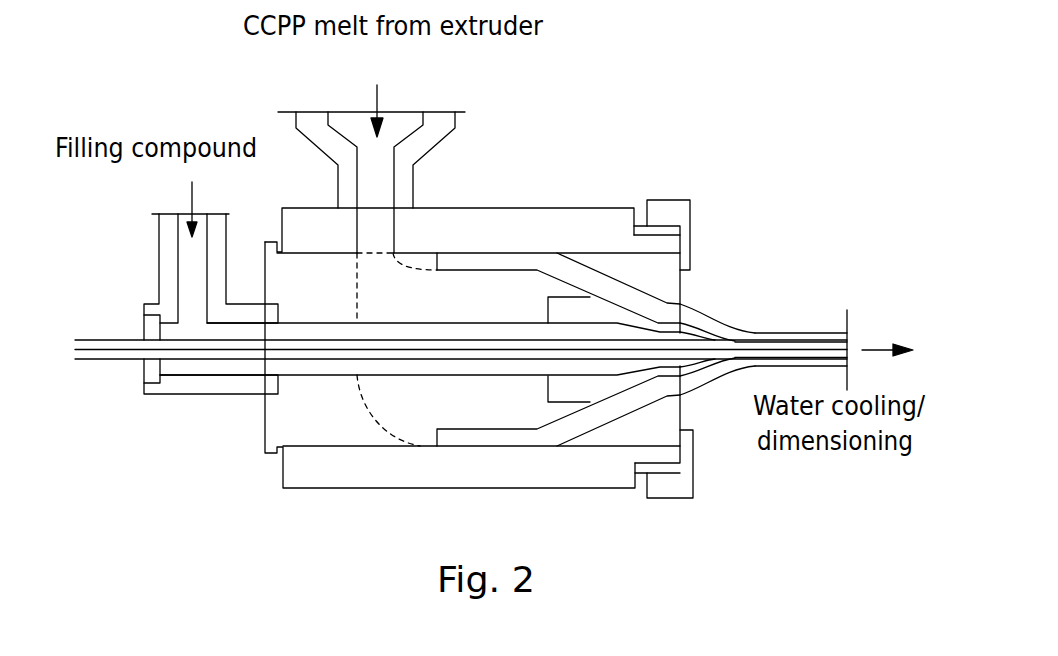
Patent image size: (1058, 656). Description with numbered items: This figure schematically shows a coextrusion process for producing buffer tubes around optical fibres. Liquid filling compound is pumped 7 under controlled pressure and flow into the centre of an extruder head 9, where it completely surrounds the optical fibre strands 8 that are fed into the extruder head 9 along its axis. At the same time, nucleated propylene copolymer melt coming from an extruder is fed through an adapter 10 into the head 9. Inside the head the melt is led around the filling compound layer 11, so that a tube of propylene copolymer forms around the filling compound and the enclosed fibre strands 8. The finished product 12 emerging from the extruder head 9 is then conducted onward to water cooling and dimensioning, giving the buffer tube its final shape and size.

The filling compound pump 7 is at (193, 262).
The optical fibre strands 8 is at (78, 386).
The extruder head 9 is at (334, 473).
The adapter 10 is at (422, 137).
The filling compound layer 11 is at (770, 339).
The product 12 is at (840, 333).